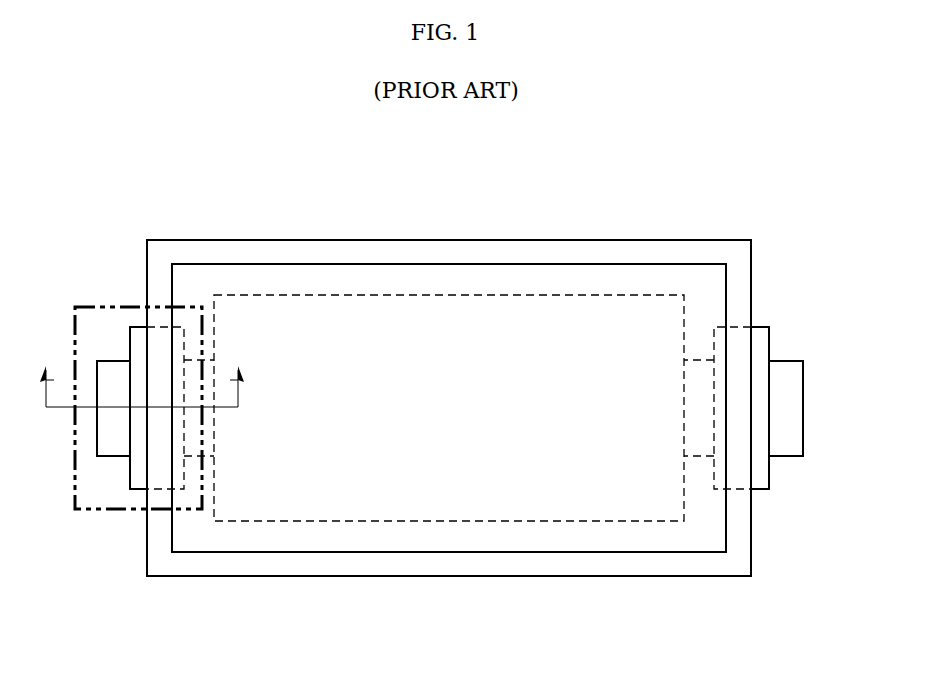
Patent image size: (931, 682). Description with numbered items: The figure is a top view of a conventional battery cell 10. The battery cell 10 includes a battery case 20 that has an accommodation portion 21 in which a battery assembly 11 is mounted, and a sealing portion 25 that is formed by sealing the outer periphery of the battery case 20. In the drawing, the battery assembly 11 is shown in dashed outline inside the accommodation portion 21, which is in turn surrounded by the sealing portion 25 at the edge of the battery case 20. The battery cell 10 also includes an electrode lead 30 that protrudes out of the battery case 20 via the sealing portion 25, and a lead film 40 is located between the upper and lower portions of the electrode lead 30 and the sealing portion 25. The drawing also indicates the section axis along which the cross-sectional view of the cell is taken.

The battery cell 10 is at (130, 169).
The battery assembly 11 is at (465, 295).
The battery case 20 is at (397, 618).
The accommodation portion 21 is at (413, 535).
The sealing portion 25 is at (472, 562).
The electrode lead 30 is at (102, 441).
The lead film 40 is at (135, 472).